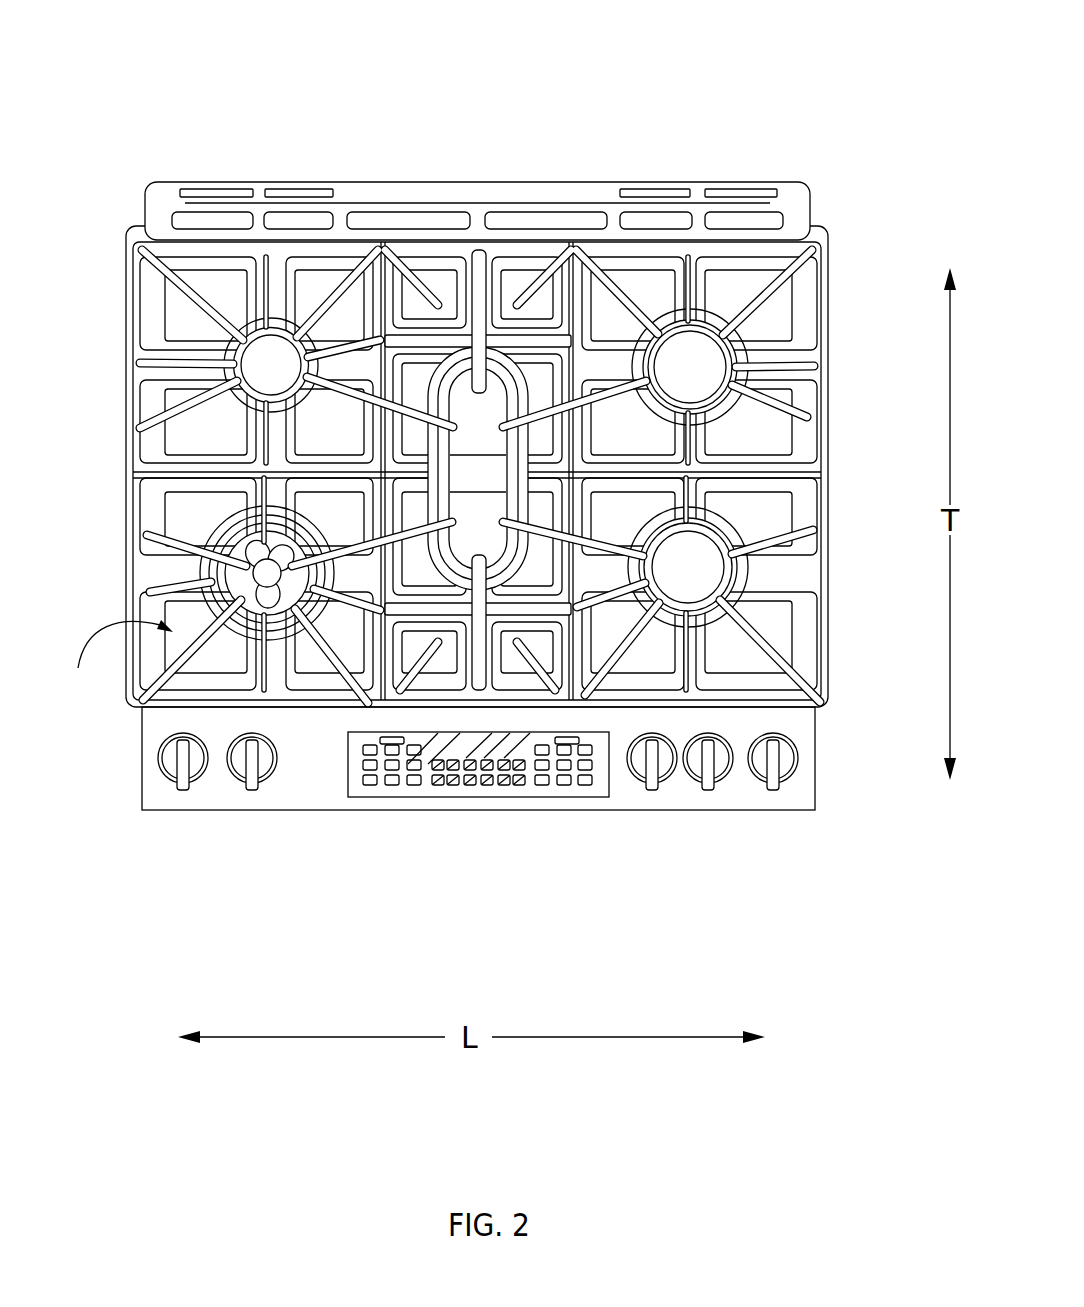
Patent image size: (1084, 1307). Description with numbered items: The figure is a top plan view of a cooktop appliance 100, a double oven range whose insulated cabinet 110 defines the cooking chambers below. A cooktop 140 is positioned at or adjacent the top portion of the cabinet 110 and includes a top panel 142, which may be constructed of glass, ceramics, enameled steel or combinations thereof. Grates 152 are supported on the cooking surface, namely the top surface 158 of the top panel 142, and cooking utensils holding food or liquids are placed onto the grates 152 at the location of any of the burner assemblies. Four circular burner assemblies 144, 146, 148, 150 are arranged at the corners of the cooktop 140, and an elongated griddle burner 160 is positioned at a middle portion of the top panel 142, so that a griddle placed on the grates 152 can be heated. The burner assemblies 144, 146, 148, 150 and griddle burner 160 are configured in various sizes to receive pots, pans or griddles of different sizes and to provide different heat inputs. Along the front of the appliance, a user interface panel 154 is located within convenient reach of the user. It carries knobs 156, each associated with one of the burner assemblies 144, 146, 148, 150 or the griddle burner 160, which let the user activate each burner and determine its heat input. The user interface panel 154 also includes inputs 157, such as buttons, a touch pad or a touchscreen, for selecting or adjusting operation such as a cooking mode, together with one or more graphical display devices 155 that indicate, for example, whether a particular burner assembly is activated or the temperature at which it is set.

The cooktop appliance 100 is at (165, 110).
The insulated cabinet 110 is at (542, 193).
The cooktop 140 is at (826, 230).
The top panel 142 is at (803, 626).
The burner assembly 144 is at (248, 367).
The burner assembly 146 is at (248, 548).
The burner assembly 148 is at (700, 357).
The burner assembly 150 is at (707, 558).
The grates 152 is at (149, 594).
The user interface panel 154 is at (414, 795).
The graphical display device 155 is at (450, 798).
The knobs 156 is at (232, 780).
The inputs 157 is at (392, 787).
The top surface 158 is at (112, 663).
The griddle burner 160 is at (492, 407).